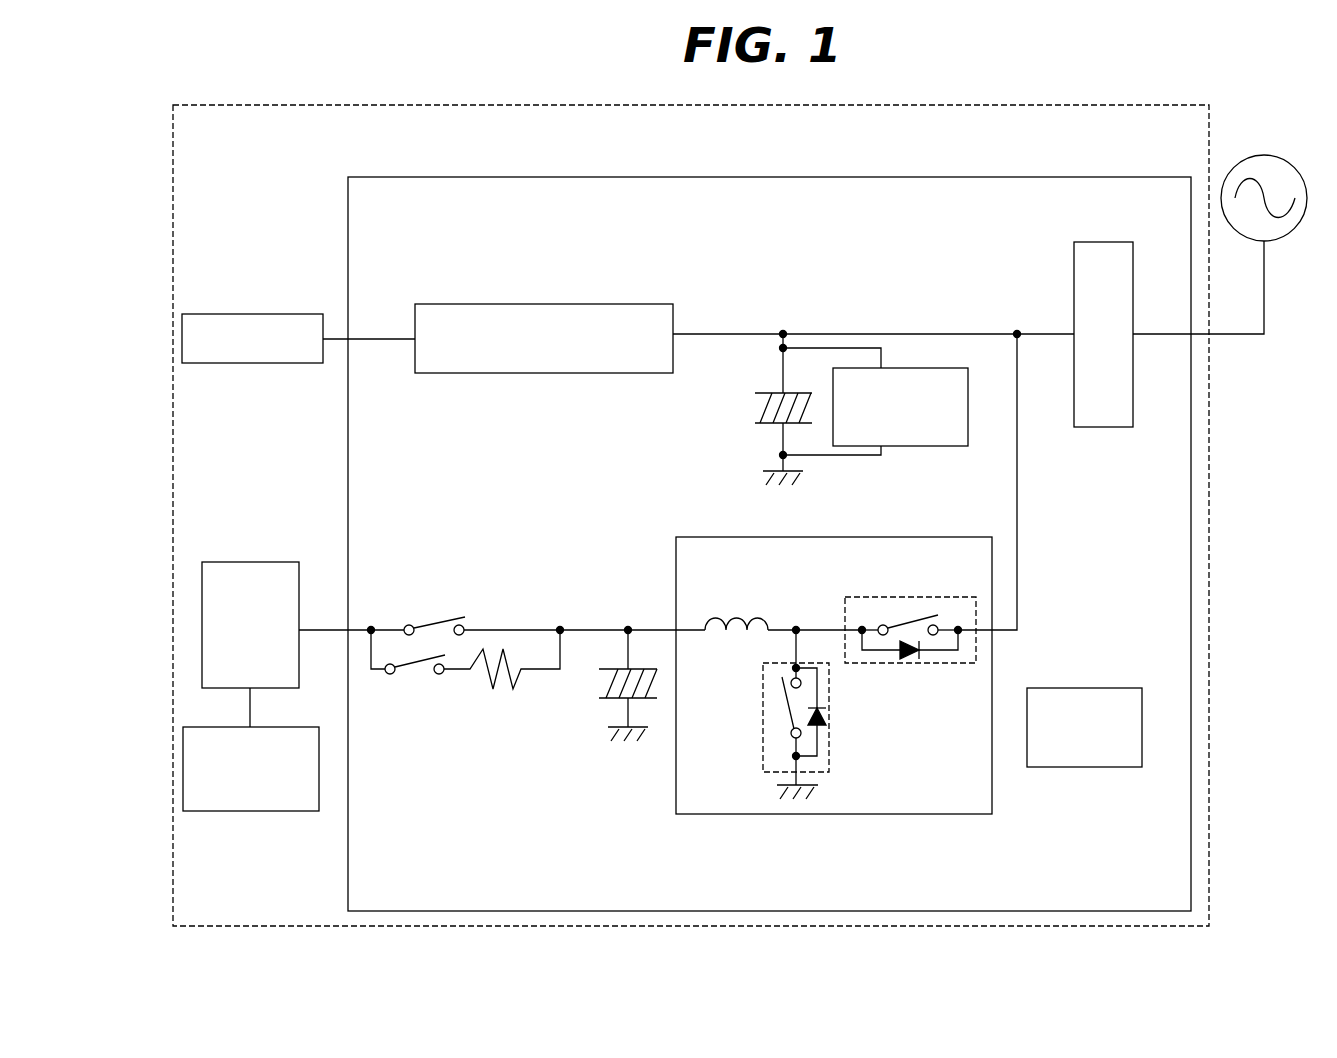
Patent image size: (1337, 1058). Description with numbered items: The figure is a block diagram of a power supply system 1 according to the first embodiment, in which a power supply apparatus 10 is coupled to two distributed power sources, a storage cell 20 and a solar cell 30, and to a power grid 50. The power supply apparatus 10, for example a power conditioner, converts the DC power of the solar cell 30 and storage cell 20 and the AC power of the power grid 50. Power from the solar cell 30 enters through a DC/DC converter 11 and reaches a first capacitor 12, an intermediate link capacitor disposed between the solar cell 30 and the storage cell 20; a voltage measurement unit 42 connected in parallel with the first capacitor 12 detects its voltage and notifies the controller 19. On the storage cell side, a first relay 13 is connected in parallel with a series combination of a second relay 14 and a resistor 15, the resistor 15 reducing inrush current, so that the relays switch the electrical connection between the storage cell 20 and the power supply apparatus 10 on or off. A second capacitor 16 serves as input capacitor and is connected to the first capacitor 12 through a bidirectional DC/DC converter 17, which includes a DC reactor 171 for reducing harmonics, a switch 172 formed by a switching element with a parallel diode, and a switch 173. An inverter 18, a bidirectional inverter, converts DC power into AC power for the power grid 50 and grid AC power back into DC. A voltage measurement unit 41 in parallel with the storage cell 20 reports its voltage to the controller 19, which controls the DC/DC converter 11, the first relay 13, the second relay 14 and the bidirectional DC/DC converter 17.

The power supply system 1 is at (1112, 105).
The power supply apparatus 10 is at (818, 177).
The DC/DC converter 11 is at (641, 292).
The first capacitor 12 is at (757, 402).
The first relay 13 is at (440, 612).
The second relay 14 is at (407, 672).
The resistor 15 is at (500, 690).
The second capacitor 16 is at (602, 684).
The bidirectional DC/DC converter 17 is at (838, 537).
The DC reactor 171 is at (734, 634).
The switch 172 is at (908, 664).
The switch 173 is at (829, 720).
The inverter 18 is at (1074, 382).
The controller 19 is at (1085, 688).
The storage cell 20 is at (247, 560).
The solar cell 30 is at (240, 313).
The voltage measurement unit 41 is at (248, 812).
The voltage measurement unit 42 is at (920, 446).
The power grid 50 is at (1292, 165).